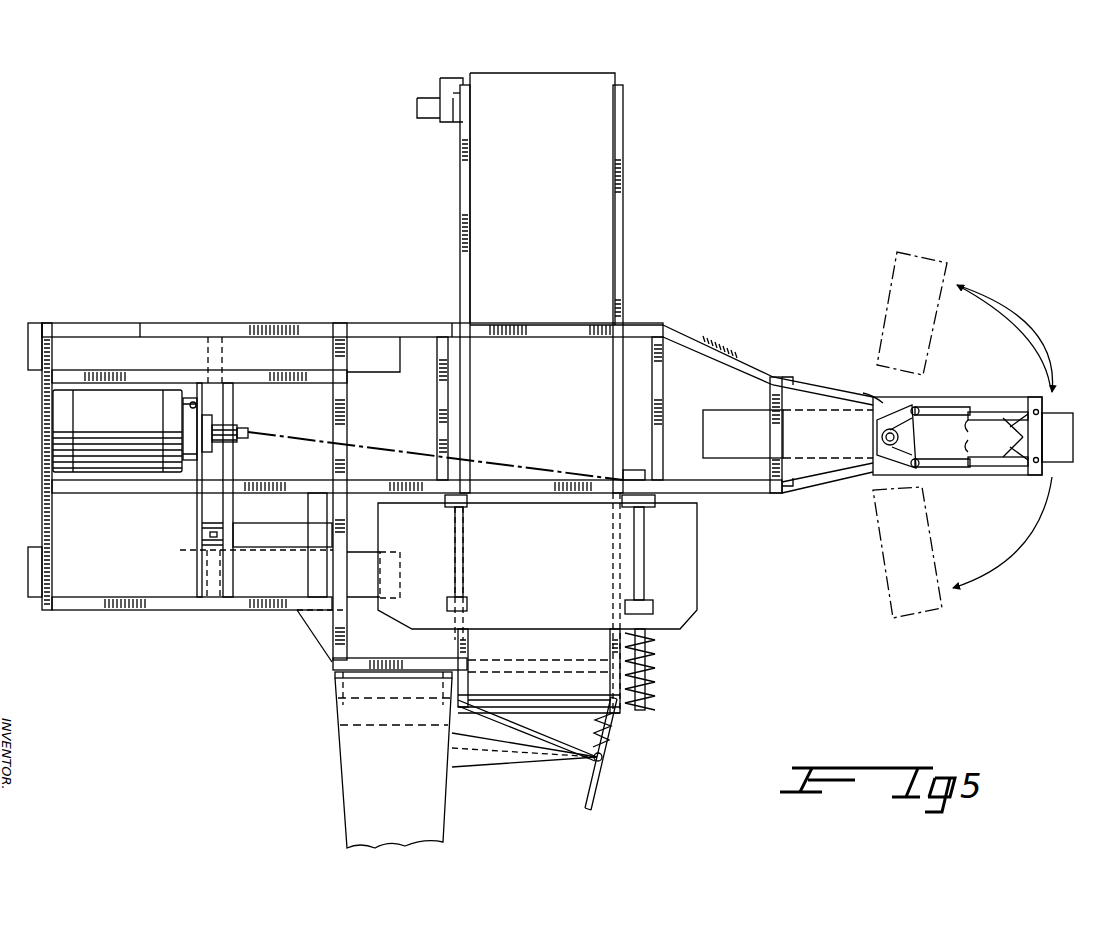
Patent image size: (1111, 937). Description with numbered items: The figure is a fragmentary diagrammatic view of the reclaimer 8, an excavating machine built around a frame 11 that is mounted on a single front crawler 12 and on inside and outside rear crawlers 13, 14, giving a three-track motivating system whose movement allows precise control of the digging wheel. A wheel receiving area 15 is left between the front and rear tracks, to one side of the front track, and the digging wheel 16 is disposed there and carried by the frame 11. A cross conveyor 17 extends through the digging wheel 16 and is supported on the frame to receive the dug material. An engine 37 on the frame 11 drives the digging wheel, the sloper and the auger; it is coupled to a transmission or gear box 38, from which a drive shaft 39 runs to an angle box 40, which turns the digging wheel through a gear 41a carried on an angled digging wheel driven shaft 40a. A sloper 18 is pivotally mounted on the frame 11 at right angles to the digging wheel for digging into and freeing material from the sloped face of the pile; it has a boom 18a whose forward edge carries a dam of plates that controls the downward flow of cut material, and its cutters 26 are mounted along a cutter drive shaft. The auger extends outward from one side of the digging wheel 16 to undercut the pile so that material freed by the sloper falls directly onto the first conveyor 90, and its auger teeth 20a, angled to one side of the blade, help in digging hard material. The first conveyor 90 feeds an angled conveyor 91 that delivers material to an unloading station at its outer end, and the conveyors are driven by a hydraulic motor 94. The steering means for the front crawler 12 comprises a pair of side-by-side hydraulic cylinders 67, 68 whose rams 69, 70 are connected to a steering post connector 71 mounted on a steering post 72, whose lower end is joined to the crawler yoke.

The reclaimer 8 is at (688, 333).
The frame 11 is at (633, 333).
The front crawler 12 is at (960, 240).
The inside rear crawler 13 is at (30, 337).
The outside rear crawler 14 is at (35, 600).
The wheel receiving area 15 is at (680, 500).
The digging wheel 16 is at (690, 575).
The cross conveyor 17 is at (502, 193).
The sloper 18 is at (600, 797).
The boom 18a is at (418, 799).
The auger teeth 20a is at (650, 674).
The cutters 26 is at (612, 747).
The engine 37 is at (138, 428).
The transmission or gear box 38 is at (228, 425).
The drive shaft 39 is at (400, 418).
The angle box 40 is at (628, 475).
The angled digging wheel driven shaft 40a is at (636, 562).
The gear 41a is at (620, 510).
The hydraulic cylinder 67 is at (1003, 470).
The hydraulic cylinder 68 is at (995, 410).
The ram 69 is at (940, 472).
The ram 70 is at (940, 407).
The steering post connector 71 is at (900, 410).
The steering post 72 is at (880, 437).
The first conveyor 90 is at (550, 650).
The angled conveyor 91 is at (588, 178).
The hydraulic motor 94 is at (418, 115).